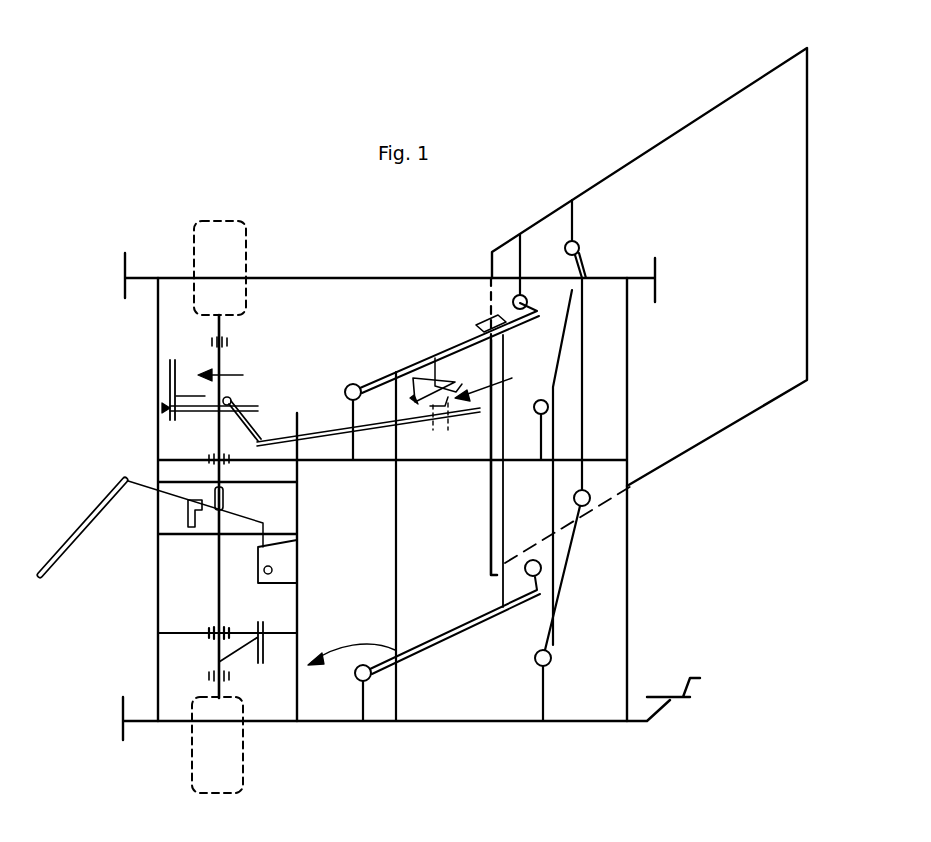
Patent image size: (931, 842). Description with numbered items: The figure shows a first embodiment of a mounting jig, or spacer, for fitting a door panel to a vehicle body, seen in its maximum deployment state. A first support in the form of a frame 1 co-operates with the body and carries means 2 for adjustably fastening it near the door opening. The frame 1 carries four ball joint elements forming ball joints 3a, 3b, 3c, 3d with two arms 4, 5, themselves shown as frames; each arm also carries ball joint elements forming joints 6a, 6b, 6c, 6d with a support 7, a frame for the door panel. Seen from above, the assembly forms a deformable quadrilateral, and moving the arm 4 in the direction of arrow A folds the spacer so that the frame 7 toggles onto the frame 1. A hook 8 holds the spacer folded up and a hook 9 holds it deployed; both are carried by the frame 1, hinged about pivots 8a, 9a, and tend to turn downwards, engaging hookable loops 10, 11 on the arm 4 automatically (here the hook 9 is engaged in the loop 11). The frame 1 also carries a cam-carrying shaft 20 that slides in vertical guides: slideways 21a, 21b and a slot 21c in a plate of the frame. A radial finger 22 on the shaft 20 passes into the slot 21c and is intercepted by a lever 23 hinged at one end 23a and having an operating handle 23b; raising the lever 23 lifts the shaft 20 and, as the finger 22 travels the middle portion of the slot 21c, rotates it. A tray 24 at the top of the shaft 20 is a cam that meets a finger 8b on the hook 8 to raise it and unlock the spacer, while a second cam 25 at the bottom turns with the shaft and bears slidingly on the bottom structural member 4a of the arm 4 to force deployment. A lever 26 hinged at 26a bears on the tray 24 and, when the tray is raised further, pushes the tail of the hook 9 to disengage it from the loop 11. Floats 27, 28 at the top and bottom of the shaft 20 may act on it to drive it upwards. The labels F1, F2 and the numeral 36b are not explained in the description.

The frame 1 is at (336, 276).
The fastening means 2 is at (125, 270).
The ball joint 3a is at (360, 384).
The ball joint 3b is at (355, 675).
The ball joint 3c is at (552, 658).
The ball joint 3d is at (550, 408).
The arm 4 is at (420, 362).
The bottom structural member 4a is at (440, 640).
The arm 5 is at (570, 358).
The ball joint 6a is at (526, 298).
The ball joint 6b is at (525, 563).
The ball joint 6c is at (592, 510).
The ball joint 6d is at (580, 243).
The support 7 is at (668, 135).
The hook 8 is at (165, 378).
The pivot 8a is at (160, 410).
The finger 8b is at (192, 398).
The hook 9 is at (440, 377).
The pivot 9a is at (448, 412).
The hookable loop 10 is at (485, 318).
The hookable loop 11 is at (450, 375).
The cam-carrying shaft 20 is at (197, 550).
The slideway 21a is at (212, 458).
The slideway 21b is at (175, 628).
The slot 21c is at (224, 497).
The radial finger 22 is at (180, 485).
The lever 23 is at (175, 512).
The end 23a is at (272, 570).
The operating handle 23b is at (70, 565).
The tray 24 is at (240, 398).
The second cam 25 is at (215, 670).
The lever 26 is at (350, 383).
The hinge 26a is at (345, 435).
The float 27 is at (220, 222).
The float 28 is at (243, 758).
The coupling 36b is at (253, 375).
The force direction F1 is at (226, 365).
The force direction F2 is at (500, 383).
The arrow A is at (351, 639).